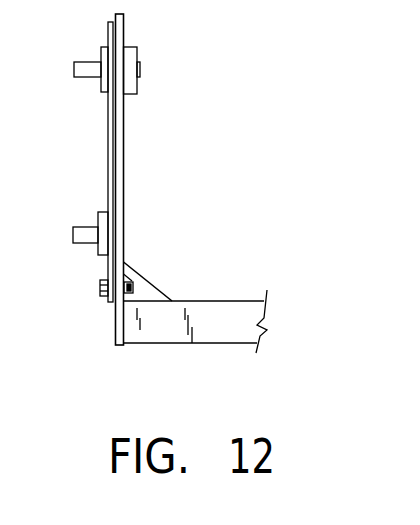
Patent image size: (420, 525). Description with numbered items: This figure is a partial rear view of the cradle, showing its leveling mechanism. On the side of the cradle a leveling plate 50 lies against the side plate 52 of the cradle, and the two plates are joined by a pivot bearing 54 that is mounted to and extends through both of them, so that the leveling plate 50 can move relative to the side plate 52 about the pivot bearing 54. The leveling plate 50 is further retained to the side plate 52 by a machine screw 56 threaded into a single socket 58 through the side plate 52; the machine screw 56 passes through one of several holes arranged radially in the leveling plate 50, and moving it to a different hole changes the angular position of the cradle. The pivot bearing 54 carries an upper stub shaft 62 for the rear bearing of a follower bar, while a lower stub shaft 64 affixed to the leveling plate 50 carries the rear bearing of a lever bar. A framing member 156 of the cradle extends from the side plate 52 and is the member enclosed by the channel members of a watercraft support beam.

The leveling plate 50 is at (107, 142).
The side plate 52 is at (124, 167).
The pivot bearing 54 is at (132, 47).
The machine screw 56 is at (98, 293).
The socket 58 is at (124, 273).
The upper stub shaft 62 is at (90, 62).
The lower stub shaft 64 is at (88, 227).
The framing member 156 is at (212, 300).